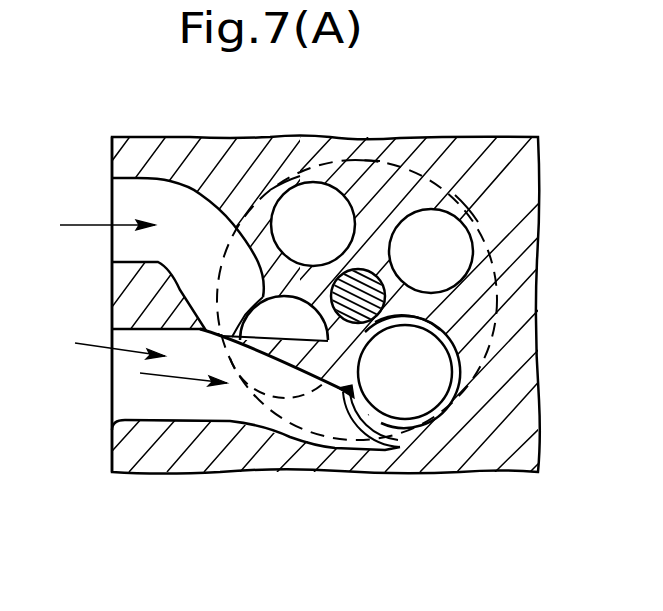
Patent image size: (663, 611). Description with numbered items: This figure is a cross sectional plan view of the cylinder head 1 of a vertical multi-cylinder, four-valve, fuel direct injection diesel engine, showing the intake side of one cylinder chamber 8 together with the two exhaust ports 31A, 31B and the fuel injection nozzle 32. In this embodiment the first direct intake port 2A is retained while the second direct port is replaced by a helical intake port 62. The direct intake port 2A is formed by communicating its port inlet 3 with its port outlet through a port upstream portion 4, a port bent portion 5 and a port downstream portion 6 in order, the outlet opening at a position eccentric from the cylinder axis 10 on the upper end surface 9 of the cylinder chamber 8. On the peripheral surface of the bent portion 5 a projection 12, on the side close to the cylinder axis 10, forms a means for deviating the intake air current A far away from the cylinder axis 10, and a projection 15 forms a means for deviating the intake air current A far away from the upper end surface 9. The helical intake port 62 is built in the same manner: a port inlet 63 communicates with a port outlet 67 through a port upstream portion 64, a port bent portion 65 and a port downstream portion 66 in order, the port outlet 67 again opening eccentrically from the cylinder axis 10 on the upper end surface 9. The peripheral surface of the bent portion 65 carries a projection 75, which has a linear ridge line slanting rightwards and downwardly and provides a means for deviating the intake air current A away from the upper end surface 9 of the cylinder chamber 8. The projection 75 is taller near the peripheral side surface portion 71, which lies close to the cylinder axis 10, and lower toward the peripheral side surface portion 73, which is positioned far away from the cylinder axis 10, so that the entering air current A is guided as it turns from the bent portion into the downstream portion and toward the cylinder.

The cylinder head 1 is at (497, 150).
The port inlet 3 is at (112, 195).
The port upstream portion 4 is at (183, 196).
The port bent portion 5 is at (190, 305).
The port downstream portion 6 is at (285, 320).
The cylinder chamber 8 is at (370, 160).
The upper end surface 9 is at (410, 175).
The cylinder axis 10 is at (392, 277).
The projection 12 is at (302, 260).
The projection 15 is at (222, 265).
The direct intake port 2A is at (83, 225).
The exhaust port 31A is at (462, 208).
The exhaust port 31B is at (300, 178).
The fuel injection nozzle 32 is at (360, 270).
The helical intake port 62 is at (94, 344).
The port inlet 63 is at (112, 388).
The port upstream portion 64 is at (233, 382).
The port bent portion 65 is at (388, 452).
The port downstream portion 66 is at (420, 372).
The port outlet 67 is at (433, 330).
The peripheral side surface portion 71 is at (350, 380).
The peripheral side surface portion 73 is at (418, 440).
The projection 75 is at (360, 422).
The intake air current A is at (165, 435).